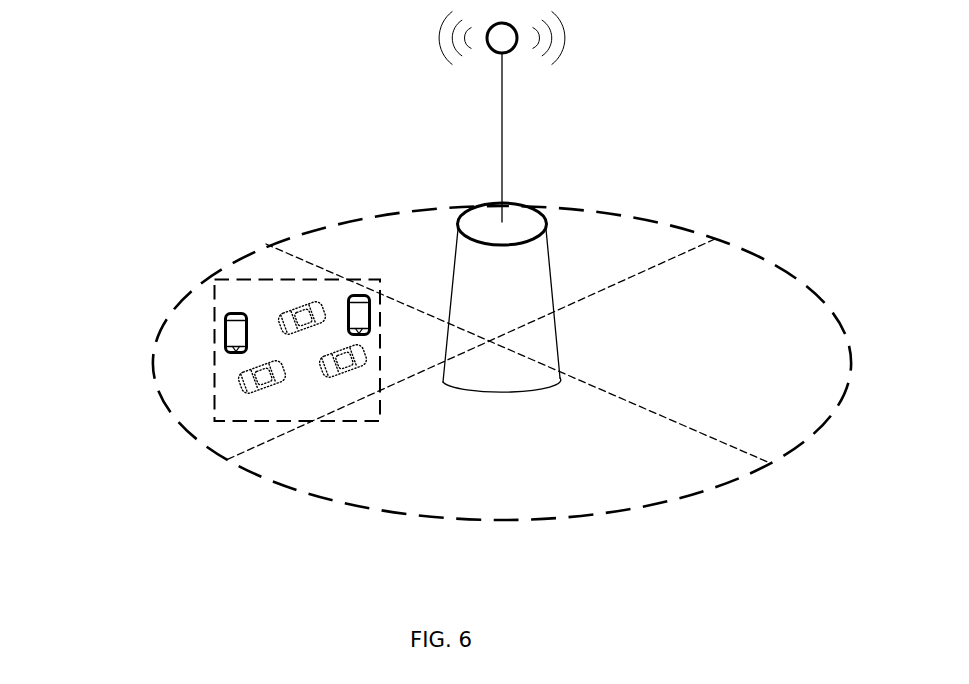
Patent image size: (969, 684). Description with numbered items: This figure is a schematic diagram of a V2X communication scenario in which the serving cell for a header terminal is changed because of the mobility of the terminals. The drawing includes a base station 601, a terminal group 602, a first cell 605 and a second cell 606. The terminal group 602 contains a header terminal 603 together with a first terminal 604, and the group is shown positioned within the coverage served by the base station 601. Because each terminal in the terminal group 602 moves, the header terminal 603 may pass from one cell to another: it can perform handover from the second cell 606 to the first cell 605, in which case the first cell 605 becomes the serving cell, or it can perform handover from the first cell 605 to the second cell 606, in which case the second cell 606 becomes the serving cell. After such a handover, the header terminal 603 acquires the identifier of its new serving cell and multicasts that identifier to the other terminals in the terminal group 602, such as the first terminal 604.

The base station 601 is at (502, 162).
The terminal group 602 is at (270, 280).
The header terminal 603 is at (225, 348).
The first terminal 604 is at (243, 395).
The cell 1 605 is at (185, 332).
The cell 2 606 is at (528, 492).